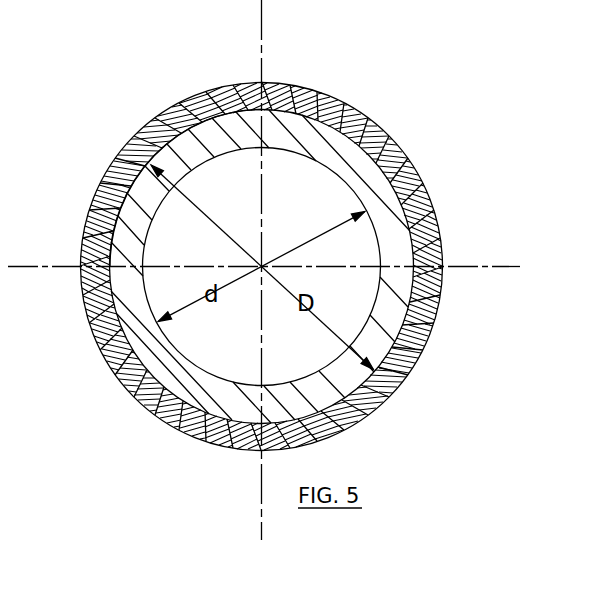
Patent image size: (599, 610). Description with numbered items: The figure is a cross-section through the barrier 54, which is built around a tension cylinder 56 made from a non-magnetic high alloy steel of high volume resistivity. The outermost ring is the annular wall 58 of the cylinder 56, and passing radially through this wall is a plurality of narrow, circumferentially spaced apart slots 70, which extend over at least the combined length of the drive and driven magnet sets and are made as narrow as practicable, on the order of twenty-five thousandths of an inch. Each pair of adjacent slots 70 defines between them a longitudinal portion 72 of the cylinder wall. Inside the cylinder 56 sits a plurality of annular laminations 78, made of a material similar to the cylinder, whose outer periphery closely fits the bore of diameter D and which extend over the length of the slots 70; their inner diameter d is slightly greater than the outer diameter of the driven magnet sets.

The barrier 54 is at (151, 80).
The tension cylinder 56 is at (370, 118).
The annular wall 58 is at (380, 133).
The slots 70 is at (442, 252).
The longitudinal portion 72 is at (83, 243).
The annular laminations 78 is at (400, 317).